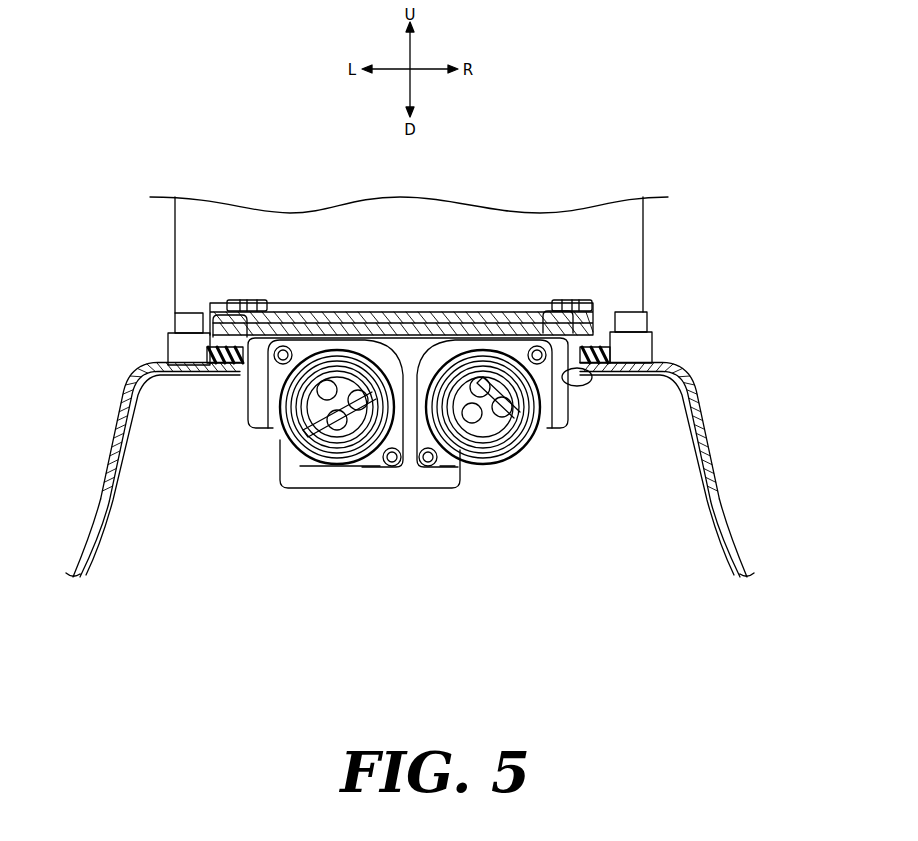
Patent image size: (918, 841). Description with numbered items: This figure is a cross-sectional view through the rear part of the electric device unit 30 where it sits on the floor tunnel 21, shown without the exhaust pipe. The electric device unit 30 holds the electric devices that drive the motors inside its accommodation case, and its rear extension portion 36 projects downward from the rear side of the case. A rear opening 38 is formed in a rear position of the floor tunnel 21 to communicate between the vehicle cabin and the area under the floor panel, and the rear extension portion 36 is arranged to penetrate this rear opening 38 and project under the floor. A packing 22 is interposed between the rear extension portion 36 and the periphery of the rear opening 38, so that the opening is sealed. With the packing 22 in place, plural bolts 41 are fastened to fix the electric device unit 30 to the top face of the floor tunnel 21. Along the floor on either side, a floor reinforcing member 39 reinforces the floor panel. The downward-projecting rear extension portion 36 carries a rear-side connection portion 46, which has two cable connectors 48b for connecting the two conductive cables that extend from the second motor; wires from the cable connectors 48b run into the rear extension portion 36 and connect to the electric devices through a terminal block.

The electric device unit 30 is at (645, 231).
The bolt 41 is at (188, 320).
The rear opening 38 is at (657, 362).
The floor reinforcing member 39 is at (690, 383).
The rear extension portion 36 is at (563, 408).
The floor tunnel 21 is at (723, 520).
The packing 22 is at (213, 357).
The cable connector 48b is at (315, 417).
The rear-side connection portion 46 is at (485, 466).